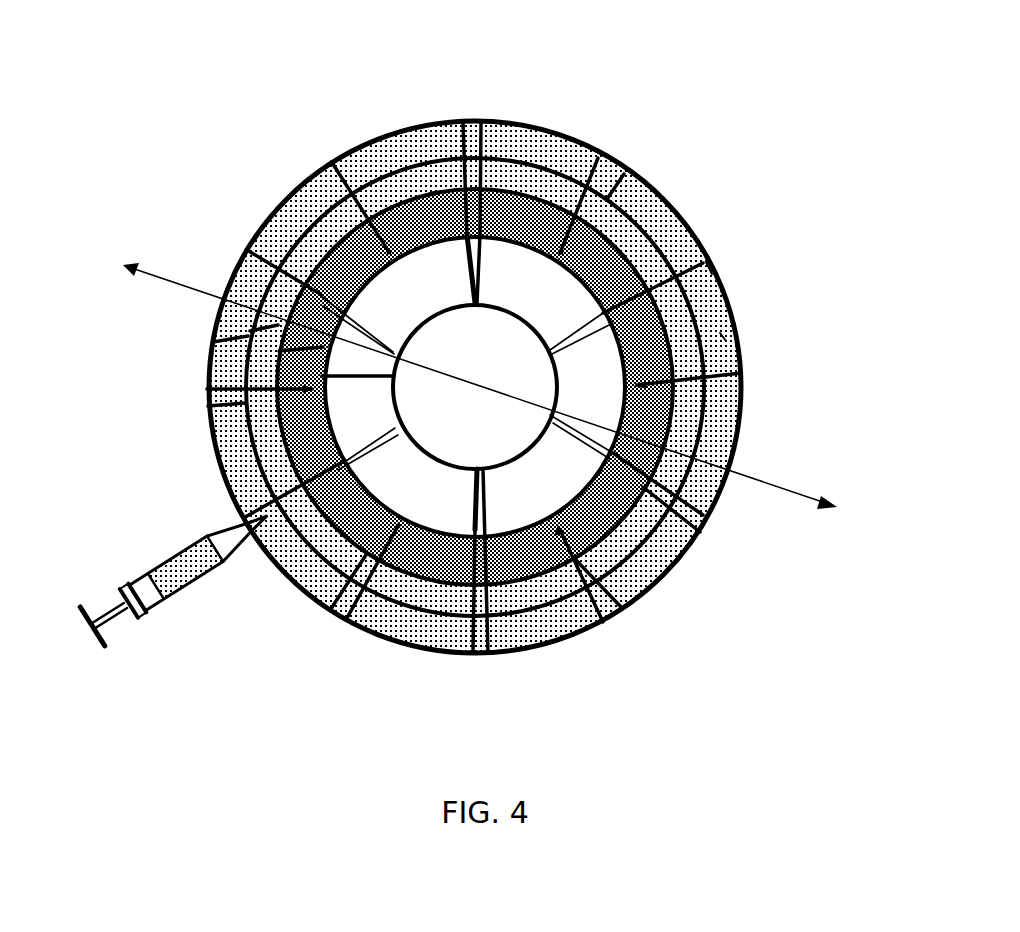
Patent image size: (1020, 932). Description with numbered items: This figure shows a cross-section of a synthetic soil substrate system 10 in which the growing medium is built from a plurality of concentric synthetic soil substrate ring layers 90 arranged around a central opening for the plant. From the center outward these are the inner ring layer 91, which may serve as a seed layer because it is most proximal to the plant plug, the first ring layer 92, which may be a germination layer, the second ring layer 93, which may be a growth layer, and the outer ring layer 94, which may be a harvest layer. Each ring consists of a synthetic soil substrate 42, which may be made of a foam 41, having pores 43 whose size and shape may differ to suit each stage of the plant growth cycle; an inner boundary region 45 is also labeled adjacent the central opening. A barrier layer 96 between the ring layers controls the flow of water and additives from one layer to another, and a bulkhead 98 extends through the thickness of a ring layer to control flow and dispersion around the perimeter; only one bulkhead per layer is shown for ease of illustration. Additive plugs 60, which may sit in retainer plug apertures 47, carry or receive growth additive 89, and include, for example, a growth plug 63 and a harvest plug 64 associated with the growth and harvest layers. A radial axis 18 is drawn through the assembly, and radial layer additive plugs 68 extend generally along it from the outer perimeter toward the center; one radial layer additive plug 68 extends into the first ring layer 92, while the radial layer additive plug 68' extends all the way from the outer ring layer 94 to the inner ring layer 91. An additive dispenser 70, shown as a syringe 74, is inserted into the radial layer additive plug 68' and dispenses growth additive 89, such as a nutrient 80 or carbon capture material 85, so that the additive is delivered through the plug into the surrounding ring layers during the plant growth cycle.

The synthetic soil substrate system 10 is at (286, 148).
The foam 41 is at (387, 160).
The synthetic soil substrate 42 is at (407, 160).
The pores 43 is at (442, 165).
The inner layer 45 is at (553, 203).
The concentric synthetic soil substrate ring layers 90 is at (507, 160).
The inner ring layer 91 is at (633, 217).
The first ring layer 92 is at (645, 248).
The harvest plug 64 is at (700, 240).
The second ring layer 93 is at (690, 288).
The outer ring layer 94 is at (723, 337).
The radial layer additive plug 68 is at (744, 374).
The radial axis 18 is at (790, 487).
The additive plugs 60 is at (713, 507).
The retainer plug apertures 47 is at (606, 604).
The growth plug 63 is at (618, 605).
The radial layer additive plug 68' is at (321, 537).
The barrier layer 96 is at (247, 373).
The bulkhead 98 is at (215, 337).
The additive dispenser 70 is at (197, 535).
The syringe 74 is at (117, 603).
The growth additive 89 is at (167, 563).
The nutrients 80 is at (170, 598).
The carbon capture material 85 is at (193, 583).